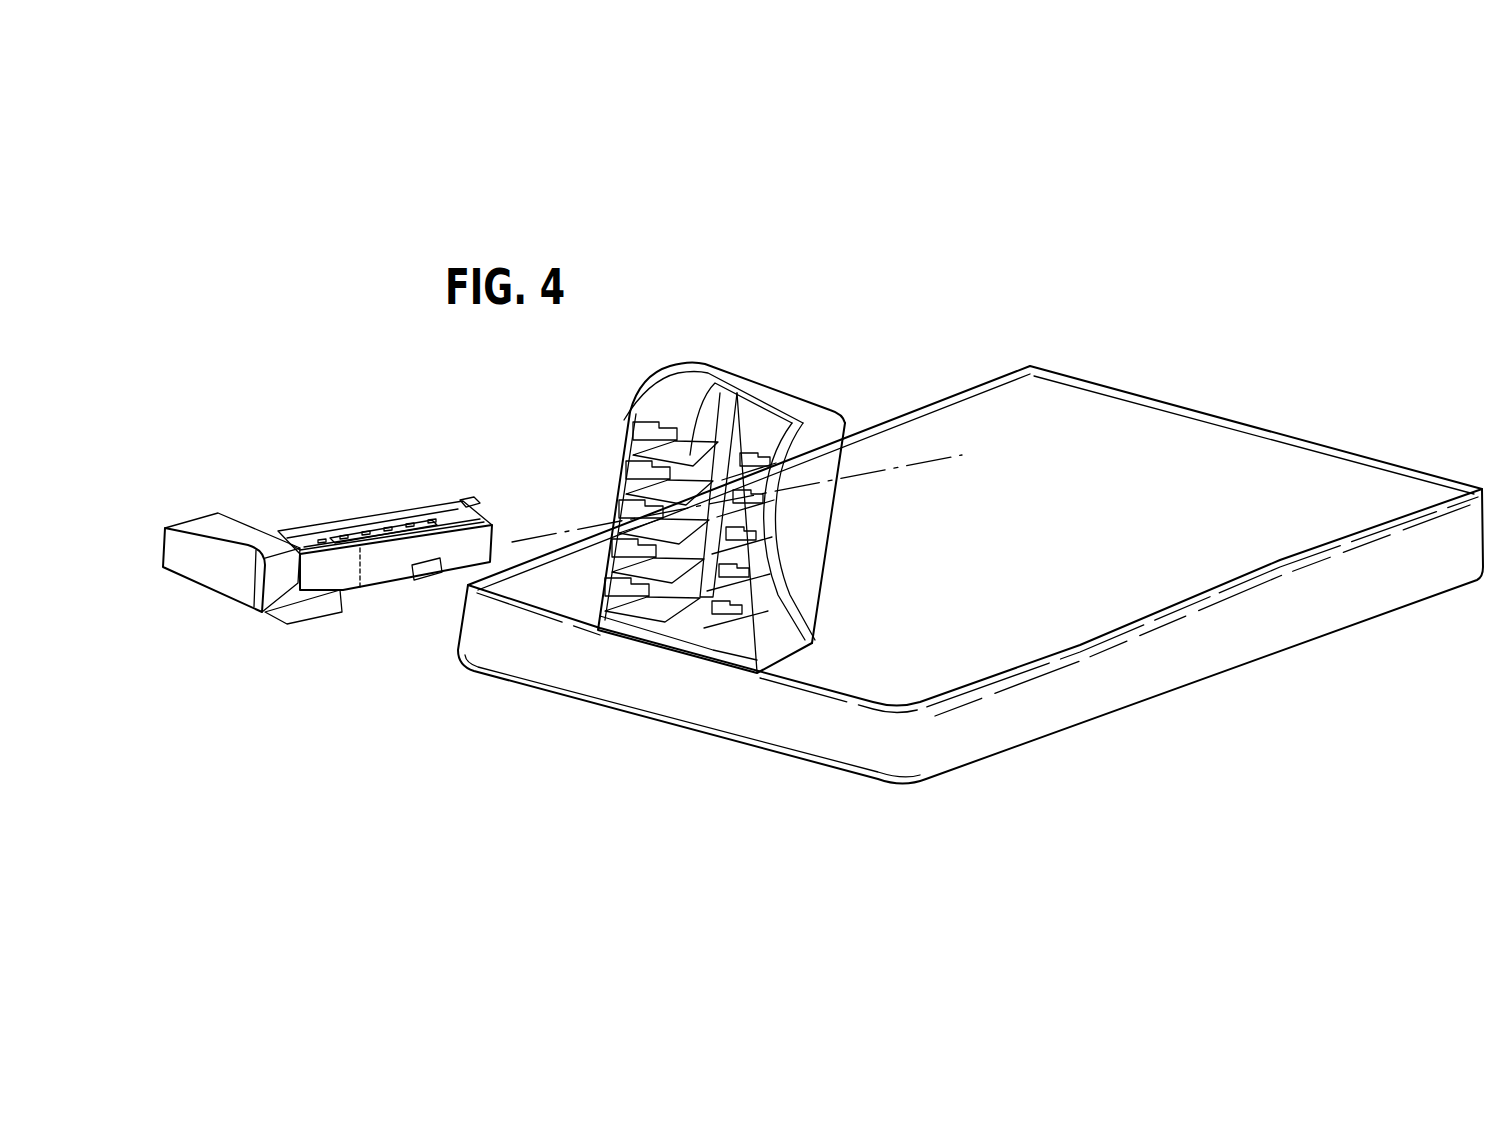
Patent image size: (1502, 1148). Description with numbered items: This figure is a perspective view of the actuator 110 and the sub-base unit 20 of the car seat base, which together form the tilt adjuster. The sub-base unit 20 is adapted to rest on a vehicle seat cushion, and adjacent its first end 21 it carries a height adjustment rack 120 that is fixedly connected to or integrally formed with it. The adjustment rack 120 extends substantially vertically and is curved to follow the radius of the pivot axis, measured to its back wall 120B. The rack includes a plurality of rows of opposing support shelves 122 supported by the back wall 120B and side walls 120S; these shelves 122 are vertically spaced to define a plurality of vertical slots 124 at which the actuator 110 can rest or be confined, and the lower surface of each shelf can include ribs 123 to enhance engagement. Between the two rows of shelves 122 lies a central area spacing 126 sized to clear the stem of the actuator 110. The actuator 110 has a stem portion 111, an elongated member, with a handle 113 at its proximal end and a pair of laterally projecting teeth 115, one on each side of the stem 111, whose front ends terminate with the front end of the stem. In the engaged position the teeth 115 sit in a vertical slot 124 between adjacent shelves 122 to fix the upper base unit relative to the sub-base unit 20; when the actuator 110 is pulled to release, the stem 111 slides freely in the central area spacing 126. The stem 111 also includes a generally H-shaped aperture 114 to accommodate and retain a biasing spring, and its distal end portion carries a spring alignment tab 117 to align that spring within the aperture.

The sub-base unit 20 is at (1112, 692).
The first end 21 is at (813, 743).
The actuator 110 is at (226, 486).
The stem portion 111 is at (377, 570).
The handle 113 is at (207, 573).
The H-shaped aperture 114 is at (430, 520).
The teeth 115 is at (306, 615).
The spring alignment tab 117 is at (472, 499).
The height adjustment rack 120 is at (669, 345).
The back wall 120B is at (873, 510).
The side walls 120S is at (803, 580).
The support shelves 122 is at (760, 585).
The ribs 123 is at (604, 596).
The vertical slots 124 is at (622, 526).
The central area spacing 126 is at (712, 587).